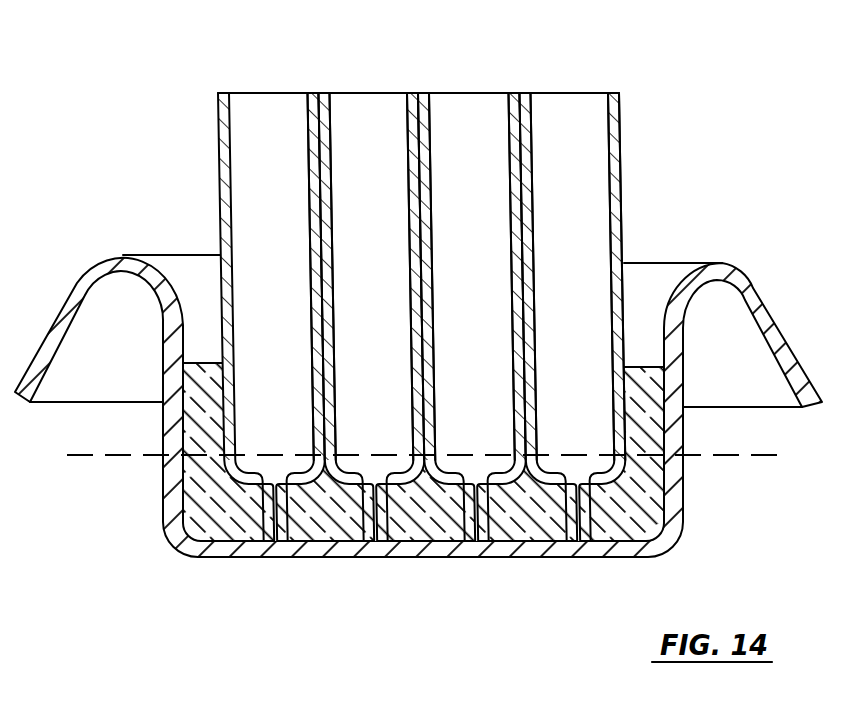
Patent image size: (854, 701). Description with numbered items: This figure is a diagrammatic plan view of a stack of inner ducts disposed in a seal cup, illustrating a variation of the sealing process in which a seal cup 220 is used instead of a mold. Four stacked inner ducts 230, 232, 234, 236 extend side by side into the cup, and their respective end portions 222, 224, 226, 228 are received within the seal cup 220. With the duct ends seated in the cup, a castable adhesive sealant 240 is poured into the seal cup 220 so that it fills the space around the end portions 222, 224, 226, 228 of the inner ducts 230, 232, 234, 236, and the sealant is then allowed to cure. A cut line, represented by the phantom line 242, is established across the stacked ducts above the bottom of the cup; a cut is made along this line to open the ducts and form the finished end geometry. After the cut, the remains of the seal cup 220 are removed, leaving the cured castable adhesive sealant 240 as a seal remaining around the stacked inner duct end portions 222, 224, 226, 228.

The seal cup 220 is at (673, 552).
The end portion 222 is at (315, 410).
The end portion 224 is at (414, 395).
The end portion 226 is at (516, 423).
The end portion 228 is at (614, 405).
The inner duct 230 is at (265, 108).
The inner duct 232 is at (363, 110).
The inner duct 234 is at (463, 112).
The inner duct 236 is at (563, 112).
The castable adhesive sealant 240 is at (640, 512).
The phantom line 242 is at (118, 457).